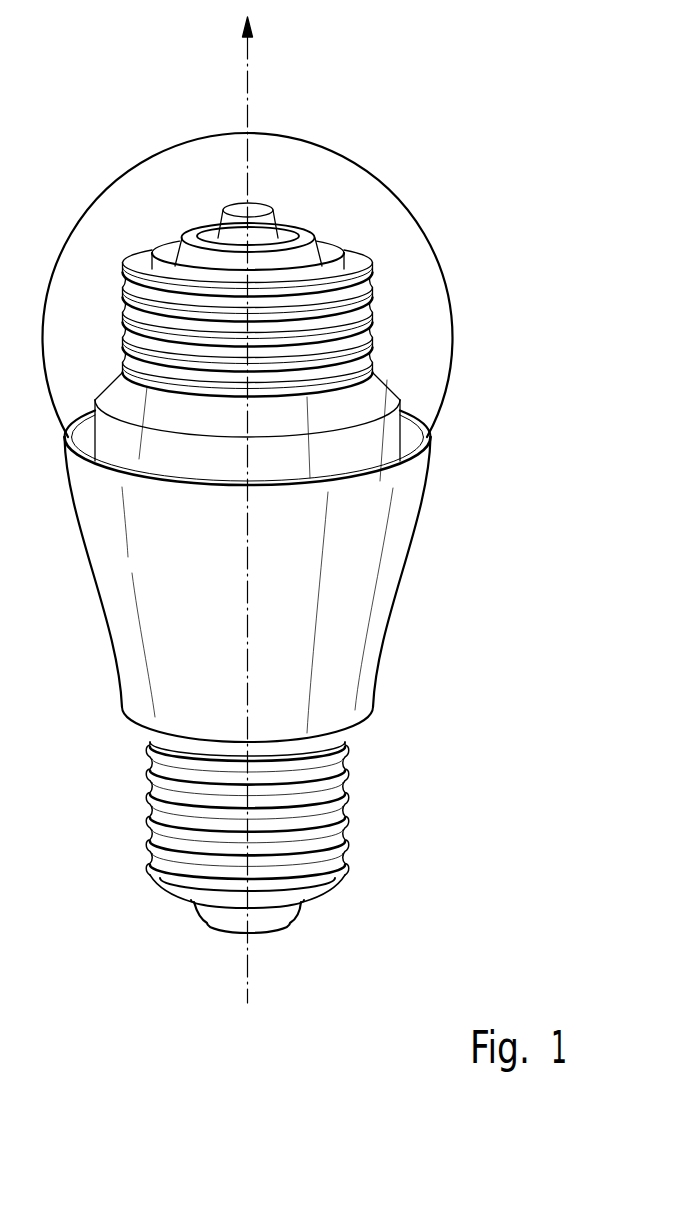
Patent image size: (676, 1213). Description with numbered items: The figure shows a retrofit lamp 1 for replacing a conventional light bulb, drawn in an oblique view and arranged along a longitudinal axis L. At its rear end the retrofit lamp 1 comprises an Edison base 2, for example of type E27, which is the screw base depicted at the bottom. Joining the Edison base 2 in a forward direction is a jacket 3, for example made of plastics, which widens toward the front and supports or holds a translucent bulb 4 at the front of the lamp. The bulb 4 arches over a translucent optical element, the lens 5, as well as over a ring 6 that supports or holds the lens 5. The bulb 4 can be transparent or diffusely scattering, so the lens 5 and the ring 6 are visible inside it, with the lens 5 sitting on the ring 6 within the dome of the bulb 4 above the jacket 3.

The retrofit lamp 1 is at (263, 508).
The Edison base 2 is at (345, 810).
The jacket 3 is at (393, 570).
The translucent bulb 4 is at (335, 177).
The lens 5 is at (130, 252).
The ring 6 is at (402, 402).
The longitudinal axis L is at (248, 980).